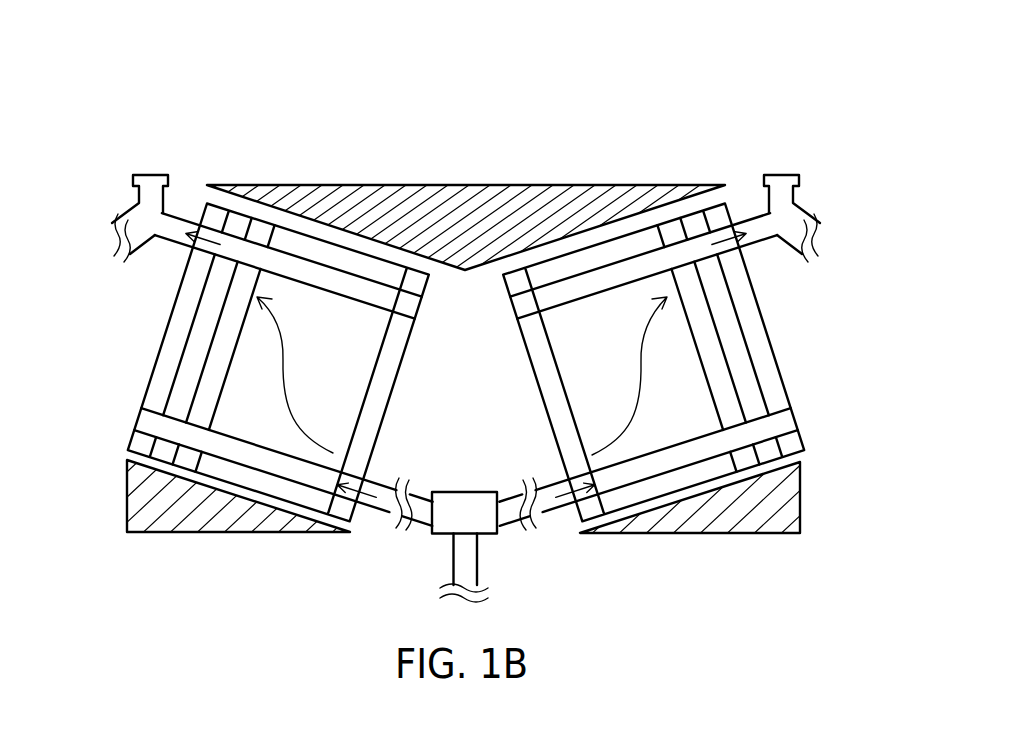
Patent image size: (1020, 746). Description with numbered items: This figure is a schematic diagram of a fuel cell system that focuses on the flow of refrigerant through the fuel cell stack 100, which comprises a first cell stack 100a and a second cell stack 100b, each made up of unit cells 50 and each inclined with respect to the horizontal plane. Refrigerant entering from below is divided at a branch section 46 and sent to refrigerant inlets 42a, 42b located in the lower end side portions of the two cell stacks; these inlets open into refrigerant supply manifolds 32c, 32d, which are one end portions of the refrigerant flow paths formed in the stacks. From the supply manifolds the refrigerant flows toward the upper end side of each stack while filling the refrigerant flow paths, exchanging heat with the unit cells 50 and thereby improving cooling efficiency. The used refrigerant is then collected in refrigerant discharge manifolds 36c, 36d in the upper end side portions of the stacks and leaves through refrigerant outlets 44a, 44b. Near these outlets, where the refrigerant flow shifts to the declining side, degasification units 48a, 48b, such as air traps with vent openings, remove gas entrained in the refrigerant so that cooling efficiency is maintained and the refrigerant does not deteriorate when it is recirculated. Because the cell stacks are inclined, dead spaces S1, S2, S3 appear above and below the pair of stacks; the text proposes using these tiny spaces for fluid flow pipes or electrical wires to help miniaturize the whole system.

The fuel cell stack 100 is at (290, 81).
The first cell stack 100a is at (260, 355).
The second cell stack 100b is at (672, 333).
The unit cells 50 is at (281, 214).
The refrigerant discharge manifold 36c is at (223, 228).
The refrigerant discharge manifold 36d is at (687, 255).
The refrigerant outlet 44a is at (190, 223).
The refrigerant outlet 44b is at (741, 228).
The degasification unit 48a is at (134, 201).
The degasification unit 48b is at (789, 181).
The refrigerant supply manifold 32c is at (322, 481).
The refrigerant supply manifold 32d is at (635, 477).
The refrigerant inlet 42a is at (362, 498).
The refrigerant inlet 42b is at (570, 498).
The branch section 46 is at (467, 491).
The space S1 is at (537, 185).
The space S2 is at (201, 522).
The space S3 is at (753, 518).